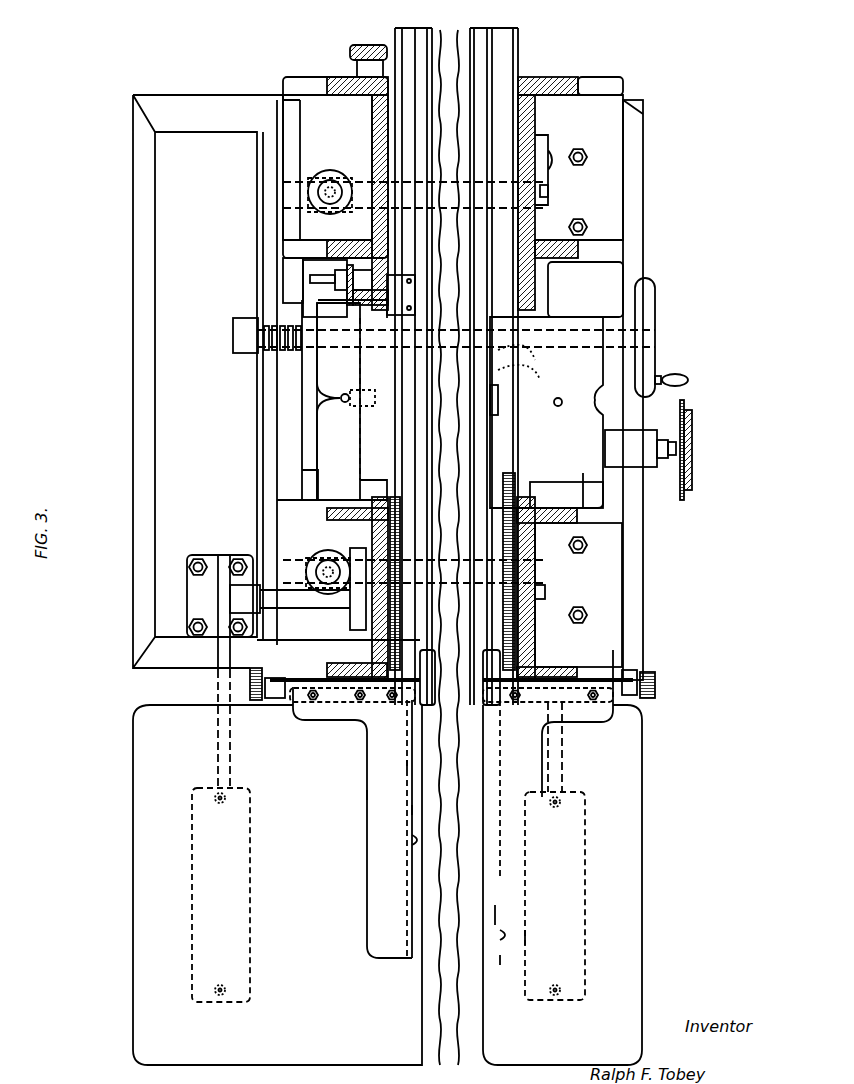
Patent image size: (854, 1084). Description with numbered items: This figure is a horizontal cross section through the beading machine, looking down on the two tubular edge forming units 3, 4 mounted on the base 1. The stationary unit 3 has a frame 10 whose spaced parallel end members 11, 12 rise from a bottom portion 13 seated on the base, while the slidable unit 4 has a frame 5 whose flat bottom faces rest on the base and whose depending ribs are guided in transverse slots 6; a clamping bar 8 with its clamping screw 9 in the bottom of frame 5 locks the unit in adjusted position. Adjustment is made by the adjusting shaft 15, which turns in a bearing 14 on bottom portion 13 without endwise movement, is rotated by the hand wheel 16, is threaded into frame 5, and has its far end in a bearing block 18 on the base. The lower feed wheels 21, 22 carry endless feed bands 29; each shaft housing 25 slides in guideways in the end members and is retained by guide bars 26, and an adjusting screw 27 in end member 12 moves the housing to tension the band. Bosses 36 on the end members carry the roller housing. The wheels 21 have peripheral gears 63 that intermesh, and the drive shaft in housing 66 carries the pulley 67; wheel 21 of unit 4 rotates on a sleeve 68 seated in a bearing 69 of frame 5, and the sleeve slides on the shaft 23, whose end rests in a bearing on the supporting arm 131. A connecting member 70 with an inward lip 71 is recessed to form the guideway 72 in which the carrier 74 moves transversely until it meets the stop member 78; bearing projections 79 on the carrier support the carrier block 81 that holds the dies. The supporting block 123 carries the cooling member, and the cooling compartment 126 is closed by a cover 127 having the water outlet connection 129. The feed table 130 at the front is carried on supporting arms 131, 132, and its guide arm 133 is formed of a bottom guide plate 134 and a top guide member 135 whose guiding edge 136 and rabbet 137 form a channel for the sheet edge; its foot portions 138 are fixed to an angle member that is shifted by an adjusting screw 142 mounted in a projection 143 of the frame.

The base 1 is at (165, 452).
The tubular edge forming unit 3 is at (610, 71).
The tubular edge forming unit 4 is at (283, 93).
The frame 5 is at (276, 285).
The transverse slots 6 is at (283, 197).
The clamping bar 8 is at (329, 383).
The clamping screw 9 is at (326, 180).
The frame 10 is at (636, 91).
The end member 11 is at (545, 524).
The end member 12 is at (290, 77).
The bottom portion 13 is at (612, 276).
The bearing 14 is at (615, 331).
The adjusting shaft 15 is at (272, 352).
The hand wheel 16 is at (652, 330).
The bearing block 18 is at (243, 322).
The wheel 21 is at (368, 547).
The wheel 22 is at (396, 42).
The shaft 23 is at (245, 572).
The shaft housing 25 is at (549, 200).
The guide bars 26 is at (552, 178).
The adjusting screw 27 is at (352, 52).
The endless feed bands 29 is at (470, 672).
The bosses 36 is at (378, 233).
The gears 63 is at (511, 476).
The housing 66 is at (657, 445).
The pulley 67 is at (691, 482).
The sleeve 68 is at (350, 607).
The bearing 69 is at (350, 625).
The connecting member 70 is at (303, 500).
The lip 71 is at (493, 371).
The guideway 72 is at (304, 484).
The carrier 74 is at (323, 462).
The stop member 78 is at (498, 401).
The bearing projections 79 is at (348, 490).
The carrier block 81 is at (366, 445).
The supporting block 123 is at (403, 295).
The cooling compartment 126 is at (340, 272).
The cover 127 is at (352, 292).
The water outlet connection 129 is at (300, 275).
The feed table 130 is at (145, 850).
The supporting arm 131 is at (218, 692).
The supporting arm 132 is at (562, 770).
The guide arm 133 is at (550, 888).
The bottom guide plate 134 is at (422, 765).
The top guide member 135 is at (372, 796).
The guiding edge 136 is at (410, 840).
The rabbet 137 is at (408, 818).
The foot portions 138 is at (338, 722).
The adjusting screw 142 is at (257, 700).
The projection 143 is at (272, 700).